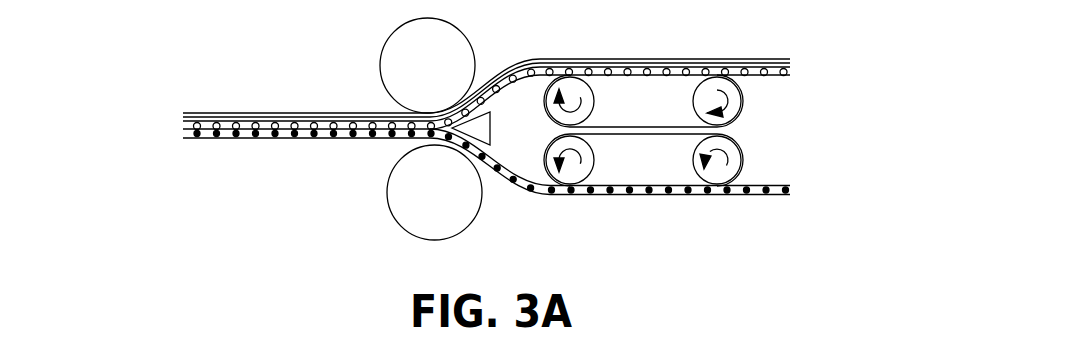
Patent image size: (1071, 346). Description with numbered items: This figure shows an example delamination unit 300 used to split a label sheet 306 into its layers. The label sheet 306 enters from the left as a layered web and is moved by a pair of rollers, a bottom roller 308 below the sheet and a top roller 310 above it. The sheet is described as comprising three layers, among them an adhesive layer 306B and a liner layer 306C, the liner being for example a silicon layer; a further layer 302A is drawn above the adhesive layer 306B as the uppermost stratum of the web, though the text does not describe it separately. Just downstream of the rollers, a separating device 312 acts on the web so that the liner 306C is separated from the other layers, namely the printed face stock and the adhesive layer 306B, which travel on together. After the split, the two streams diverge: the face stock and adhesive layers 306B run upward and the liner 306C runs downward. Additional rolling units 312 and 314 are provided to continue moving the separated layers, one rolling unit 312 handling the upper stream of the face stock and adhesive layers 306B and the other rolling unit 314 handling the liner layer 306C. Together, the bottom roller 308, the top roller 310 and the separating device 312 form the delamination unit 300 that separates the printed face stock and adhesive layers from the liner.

The delamination unit 300 is at (173, 38).
The top layer 302A is at (217, 110).
The label sheet 306 is at (412, 138).
The adhesive layer 306B is at (187, 125).
The liner layer 306C is at (348, 138).
The bottom roller 308 is at (413, 200).
The top roller 310 is at (398, 55).
The separating device 312 is at (470, 131).
The rolling unit 314 is at (753, 162).